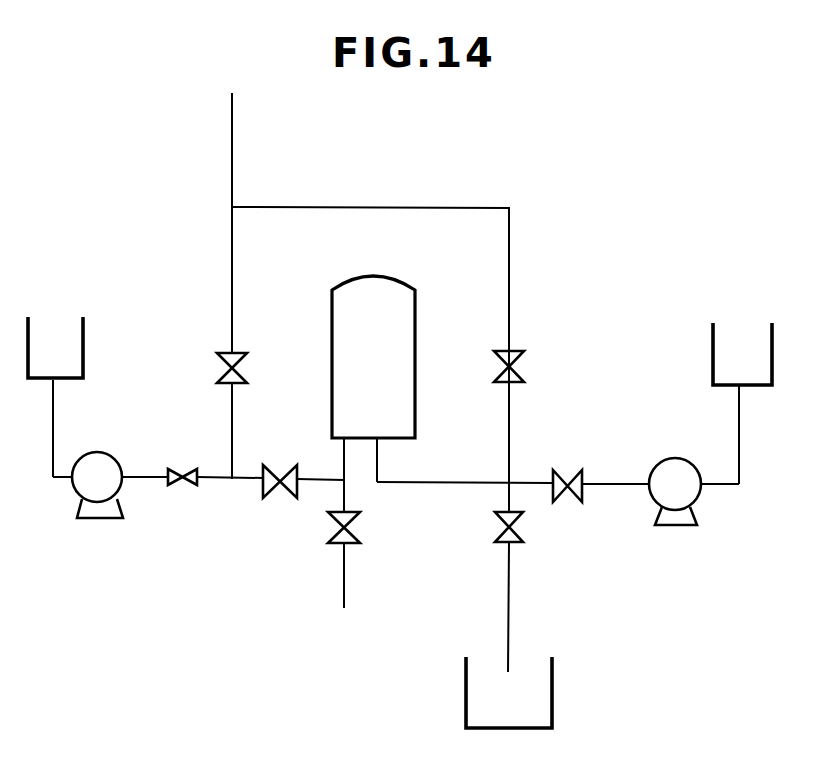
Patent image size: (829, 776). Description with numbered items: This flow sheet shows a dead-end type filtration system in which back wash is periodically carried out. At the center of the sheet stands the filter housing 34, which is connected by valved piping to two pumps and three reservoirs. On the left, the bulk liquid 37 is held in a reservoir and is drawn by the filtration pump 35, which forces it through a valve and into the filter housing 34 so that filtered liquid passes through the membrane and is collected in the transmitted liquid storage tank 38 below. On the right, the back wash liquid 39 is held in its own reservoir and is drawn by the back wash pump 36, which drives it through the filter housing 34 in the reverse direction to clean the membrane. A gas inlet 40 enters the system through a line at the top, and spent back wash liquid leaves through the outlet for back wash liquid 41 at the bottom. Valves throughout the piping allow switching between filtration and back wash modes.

The filter housing 34 is at (400, 292).
The filtration pump 35 is at (73, 495).
The back wash pump 36 is at (697, 494).
The bulk liquid 37 is at (65, 320).
The transmitted liquid storage tank 38 is at (528, 705).
The back wash liquid 39 is at (753, 333).
The gas inlet 40 is at (233, 105).
The outlet for back wash liquid 41 is at (343, 598).